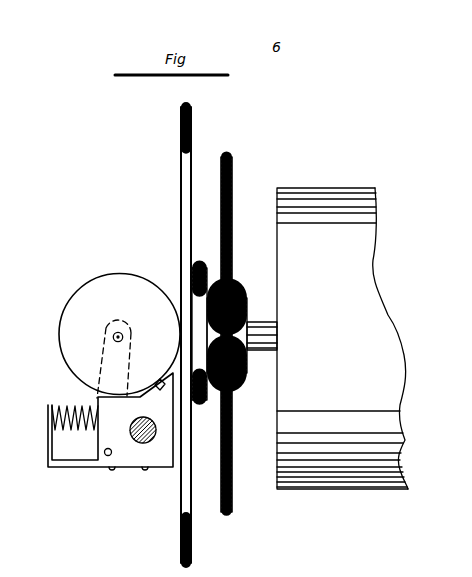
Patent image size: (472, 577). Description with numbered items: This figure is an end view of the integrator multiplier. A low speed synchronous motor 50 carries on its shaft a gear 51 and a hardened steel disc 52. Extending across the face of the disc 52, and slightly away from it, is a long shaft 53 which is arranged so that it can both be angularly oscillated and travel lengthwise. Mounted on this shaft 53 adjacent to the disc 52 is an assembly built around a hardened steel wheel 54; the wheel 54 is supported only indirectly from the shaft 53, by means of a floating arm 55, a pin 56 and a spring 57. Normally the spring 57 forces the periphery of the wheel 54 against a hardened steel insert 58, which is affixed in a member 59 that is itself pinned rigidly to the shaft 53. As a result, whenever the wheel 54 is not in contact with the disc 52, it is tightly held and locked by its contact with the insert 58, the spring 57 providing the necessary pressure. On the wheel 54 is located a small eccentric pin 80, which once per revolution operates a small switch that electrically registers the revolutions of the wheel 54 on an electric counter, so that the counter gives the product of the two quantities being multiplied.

The low speed synchronous motor 50 is at (398, 330).
The gear 51 is at (227, 511).
The hardened steel disc 52 is at (180, 540).
The long shaft 53 is at (140, 443).
The hardened steel wheel 54 is at (113, 275).
The floating arm 55 is at (108, 365).
The pin 56 is at (102, 458).
The spring 57 is at (72, 430).
The hardened steel insert 58 is at (161, 389).
The member 59 is at (162, 457).
The eccentric pin 80 is at (120, 312).